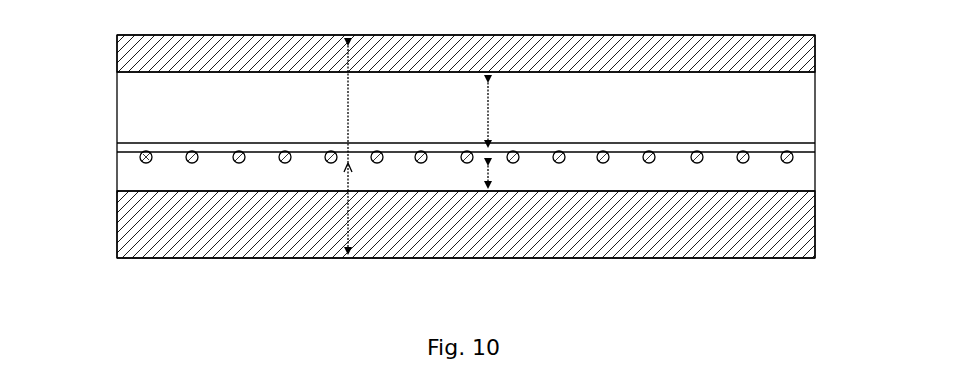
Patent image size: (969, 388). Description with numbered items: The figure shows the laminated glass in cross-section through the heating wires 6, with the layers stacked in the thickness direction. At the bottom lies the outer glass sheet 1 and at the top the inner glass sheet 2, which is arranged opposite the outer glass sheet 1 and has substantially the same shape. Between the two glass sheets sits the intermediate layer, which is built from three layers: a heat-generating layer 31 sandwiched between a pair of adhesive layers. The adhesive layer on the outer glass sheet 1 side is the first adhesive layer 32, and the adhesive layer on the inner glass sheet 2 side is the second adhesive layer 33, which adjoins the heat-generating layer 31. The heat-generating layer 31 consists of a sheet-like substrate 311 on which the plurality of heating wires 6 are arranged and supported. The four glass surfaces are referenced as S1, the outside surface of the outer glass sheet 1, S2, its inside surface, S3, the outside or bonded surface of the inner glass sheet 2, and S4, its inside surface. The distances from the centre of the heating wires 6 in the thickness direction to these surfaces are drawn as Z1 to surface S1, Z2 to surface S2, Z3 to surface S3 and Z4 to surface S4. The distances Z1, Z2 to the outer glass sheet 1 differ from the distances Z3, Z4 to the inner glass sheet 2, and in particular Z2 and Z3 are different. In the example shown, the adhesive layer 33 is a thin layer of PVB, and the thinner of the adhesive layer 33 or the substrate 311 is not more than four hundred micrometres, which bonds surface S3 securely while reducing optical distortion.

The outer glass sheet 1 is at (117, 221).
The inner glass sheet 2 is at (130, 52).
The heating wires 6 is at (330, 164).
The heat-generating layer 31 is at (509, 217).
The substrate 311 is at (120, 144).
The first adhesive layer 32 is at (127, 172).
The second adhesive layer 33 is at (130, 82).
The outside surface of the outer glass sheet S1 is at (827, 259).
The inside surface of the outer glass sheet S2 is at (827, 193).
The outside surface of the inner glass sheet S3 is at (827, 75).
The inside surface of the inner glass sheet S4 is at (827, 39).
The distance Z1 is at (366, 176).
The distance Z2 is at (510, 176).
The distance Z3 is at (510, 111).
The distance Z4 is at (368, 146).